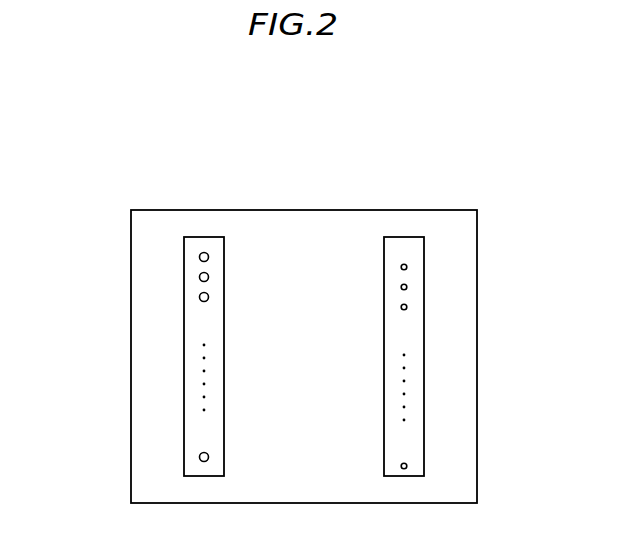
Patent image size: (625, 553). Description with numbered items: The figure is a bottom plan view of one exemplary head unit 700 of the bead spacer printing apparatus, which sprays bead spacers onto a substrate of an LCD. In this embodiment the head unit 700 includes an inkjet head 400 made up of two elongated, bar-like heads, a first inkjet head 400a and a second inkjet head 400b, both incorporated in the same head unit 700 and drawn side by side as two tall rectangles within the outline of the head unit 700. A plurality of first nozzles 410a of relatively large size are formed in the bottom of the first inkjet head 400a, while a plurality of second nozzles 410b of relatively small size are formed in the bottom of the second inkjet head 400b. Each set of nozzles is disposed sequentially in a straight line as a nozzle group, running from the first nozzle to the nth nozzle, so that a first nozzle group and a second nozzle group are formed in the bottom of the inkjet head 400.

The inkjet head 400 is at (415, 157).
The first inkjet head 400a is at (206, 237).
The second inkjet head 400b is at (405, 237).
The first nozzles 410a is at (199, 257).
The second nozzles 410b is at (407, 267).
The head unit 700 is at (455, 210).